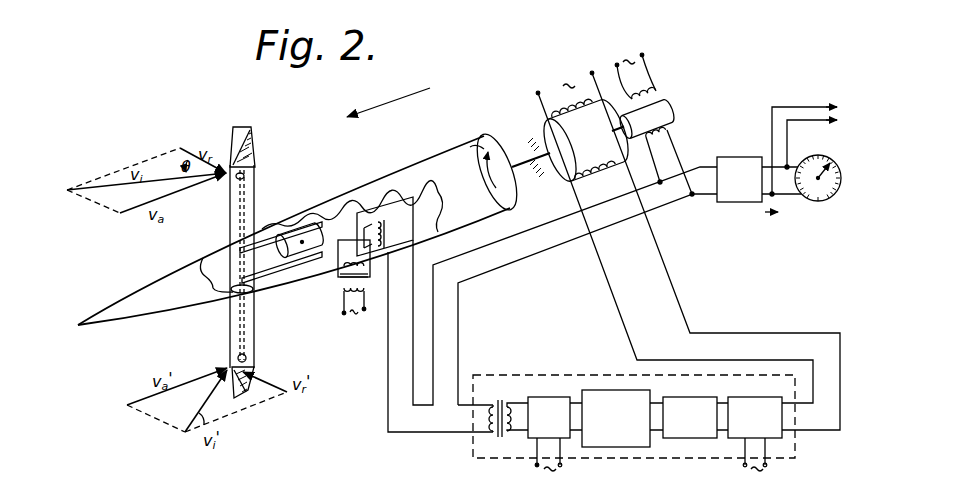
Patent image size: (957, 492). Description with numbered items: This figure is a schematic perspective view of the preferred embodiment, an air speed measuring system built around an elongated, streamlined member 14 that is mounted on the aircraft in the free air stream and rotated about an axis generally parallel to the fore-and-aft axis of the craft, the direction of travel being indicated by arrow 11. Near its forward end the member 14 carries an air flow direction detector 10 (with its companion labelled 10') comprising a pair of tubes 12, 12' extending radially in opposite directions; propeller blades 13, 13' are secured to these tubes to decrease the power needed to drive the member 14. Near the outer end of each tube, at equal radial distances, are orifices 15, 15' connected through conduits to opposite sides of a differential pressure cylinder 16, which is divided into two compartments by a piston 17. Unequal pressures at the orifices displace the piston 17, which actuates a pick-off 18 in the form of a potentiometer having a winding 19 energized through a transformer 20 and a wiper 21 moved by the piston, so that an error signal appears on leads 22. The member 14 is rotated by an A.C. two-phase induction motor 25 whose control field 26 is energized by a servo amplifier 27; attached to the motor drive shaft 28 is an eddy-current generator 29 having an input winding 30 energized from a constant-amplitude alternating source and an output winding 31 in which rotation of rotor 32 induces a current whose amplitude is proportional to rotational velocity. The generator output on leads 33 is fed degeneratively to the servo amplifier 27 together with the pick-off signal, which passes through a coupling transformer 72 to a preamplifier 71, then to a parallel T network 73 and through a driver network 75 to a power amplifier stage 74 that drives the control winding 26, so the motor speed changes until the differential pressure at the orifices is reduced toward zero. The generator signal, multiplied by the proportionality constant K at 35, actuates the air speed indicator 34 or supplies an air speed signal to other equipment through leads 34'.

The air flow direction detector 10 is at (209, 214).
The flow direction arrow (lower) 10' is at (210, 351).
The direction of travel arrow 11 is at (398, 95).
The tube 12 is at (261, 266).
The tube 12' is at (280, 327).
The propeller blade 13 is at (259, 133).
The propeller blade 13' is at (259, 398).
The elongated streamlined member 14 is at (142, 311).
The orifice 15 is at (214, 192).
The orifice 15' is at (267, 352).
The differential pressure cylinder 16 is at (300, 231).
The piston 17 is at (308, 250).
The pick-off 18 is at (348, 216).
The potentiometer winding 19 is at (381, 233).
The transformer 20 is at (338, 292).
The wiper 21 is at (365, 218).
The leads 22 is at (412, 343).
The motor 25 is at (557, 185).
The control field winding 26 is at (600, 172).
The servo amplifier 27 is at (564, 375).
The motor drive shaft 28 is at (548, 122).
The generator 29 is at (680, 104).
The input winding 30 is at (615, 67).
The output winding 31 is at (682, 140).
The rotor 32 is at (685, 110).
The generator output leads 33 is at (547, 226).
The air speed indicator 34 is at (818, 195).
The leads 34' is at (803, 135).
The proportionality constant multiplier 35 is at (742, 157).
The preamplifier 71 is at (527, 440).
The coupling transformer 72 is at (497, 400).
The parallel T network 73 is at (617, 448).
The power amplifier stage 74 is at (775, 440).
The driver network 75 is at (693, 439).